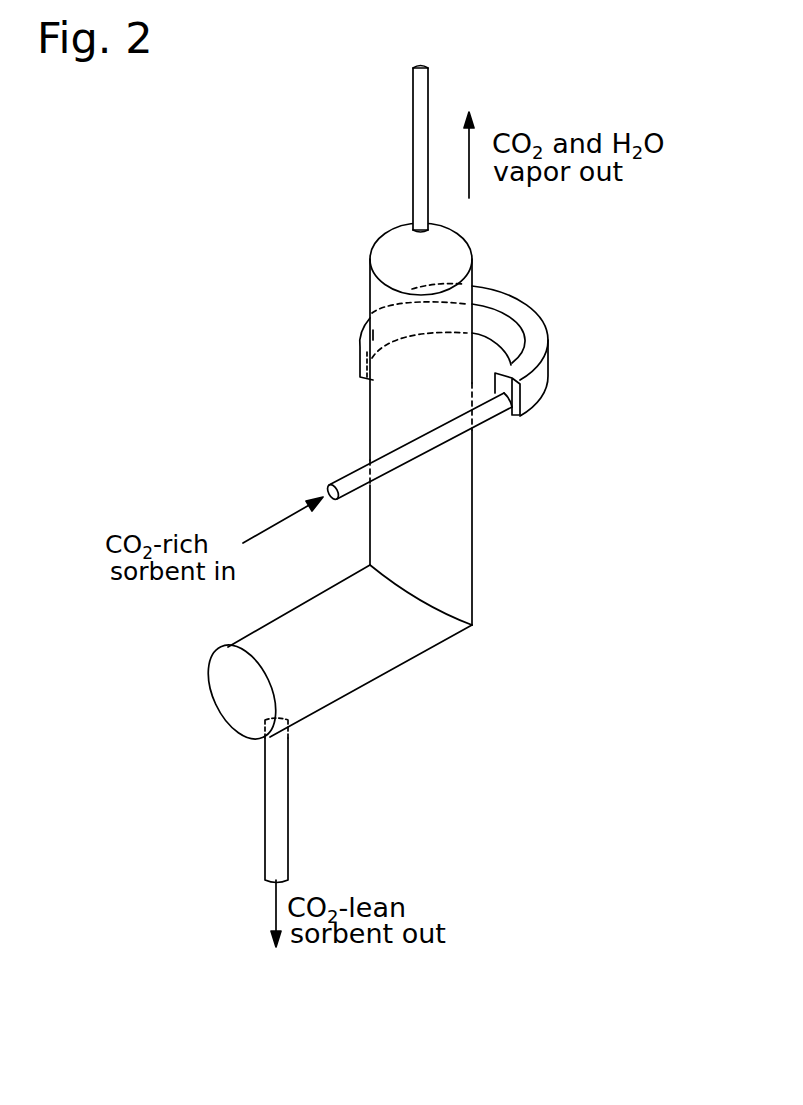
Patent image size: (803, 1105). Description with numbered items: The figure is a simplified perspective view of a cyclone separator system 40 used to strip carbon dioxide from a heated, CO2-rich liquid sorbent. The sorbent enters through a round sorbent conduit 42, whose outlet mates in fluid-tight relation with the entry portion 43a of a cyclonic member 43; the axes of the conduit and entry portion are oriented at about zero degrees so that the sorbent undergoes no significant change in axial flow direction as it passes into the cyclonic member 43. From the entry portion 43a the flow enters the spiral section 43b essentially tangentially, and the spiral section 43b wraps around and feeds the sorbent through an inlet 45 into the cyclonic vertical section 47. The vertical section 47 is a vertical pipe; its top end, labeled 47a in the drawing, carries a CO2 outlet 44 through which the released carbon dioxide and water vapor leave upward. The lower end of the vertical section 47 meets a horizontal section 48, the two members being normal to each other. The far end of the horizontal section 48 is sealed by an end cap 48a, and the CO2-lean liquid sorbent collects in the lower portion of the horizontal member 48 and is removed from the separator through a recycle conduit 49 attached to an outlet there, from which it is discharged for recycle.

The cyclone separator system 40 is at (307, 282).
The sorbent conduit 42 is at (350, 478).
The cyclonic member 43 is at (504, 325).
The entry portion 43a is at (530, 362).
The spiral section 43b is at (478, 297).
The CO2 outlet 44 is at (427, 188).
The inlet 45 is at (375, 345).
The cyclonic vertical section 47 is at (457, 553).
The top end of vertical vessel 47a is at (388, 247).
The horizontal section 48 is at (297, 657).
The end cap 48a is at (235, 697).
The recycle conduit 49 is at (275, 762).